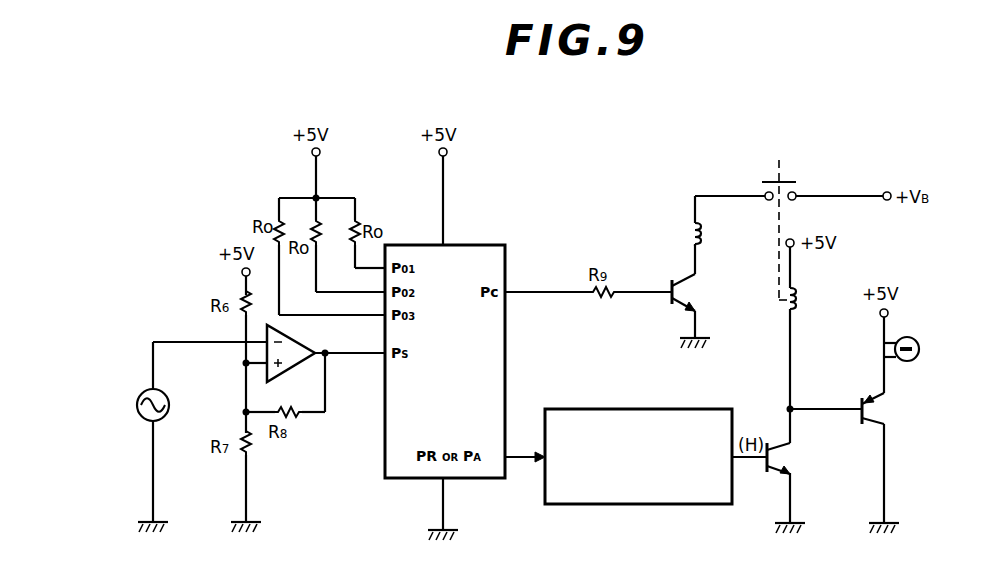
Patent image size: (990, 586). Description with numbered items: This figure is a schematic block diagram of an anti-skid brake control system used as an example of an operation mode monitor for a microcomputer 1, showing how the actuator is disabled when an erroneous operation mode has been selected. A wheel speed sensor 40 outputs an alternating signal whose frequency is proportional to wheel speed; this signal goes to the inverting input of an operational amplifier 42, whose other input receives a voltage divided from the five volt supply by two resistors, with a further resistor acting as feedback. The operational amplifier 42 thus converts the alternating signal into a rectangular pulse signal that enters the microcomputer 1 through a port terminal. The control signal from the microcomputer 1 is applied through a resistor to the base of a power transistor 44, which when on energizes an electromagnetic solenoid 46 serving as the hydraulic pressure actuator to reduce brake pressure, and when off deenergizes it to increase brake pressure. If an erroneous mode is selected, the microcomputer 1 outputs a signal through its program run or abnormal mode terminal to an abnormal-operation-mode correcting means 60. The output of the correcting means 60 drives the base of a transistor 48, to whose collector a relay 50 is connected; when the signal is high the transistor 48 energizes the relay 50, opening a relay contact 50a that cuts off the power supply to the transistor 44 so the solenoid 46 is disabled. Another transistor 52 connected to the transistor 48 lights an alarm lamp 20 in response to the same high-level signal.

The microcomputer 1 is at (482, 245).
The alarm lamp 20 is at (921, 345).
The wheel speed sensor 40 is at (138, 394).
The operational amplifier 42 is at (296, 372).
The power transistor 44 is at (699, 284).
The electromagnetic solenoid 46 is at (690, 231).
The transistor 48 is at (780, 450).
The relay 50 is at (800, 300).
The relay contact 50a is at (781, 180).
The transistor 52 is at (882, 398).
The abnormal-operation-mode correcting means 60 is at (676, 409).